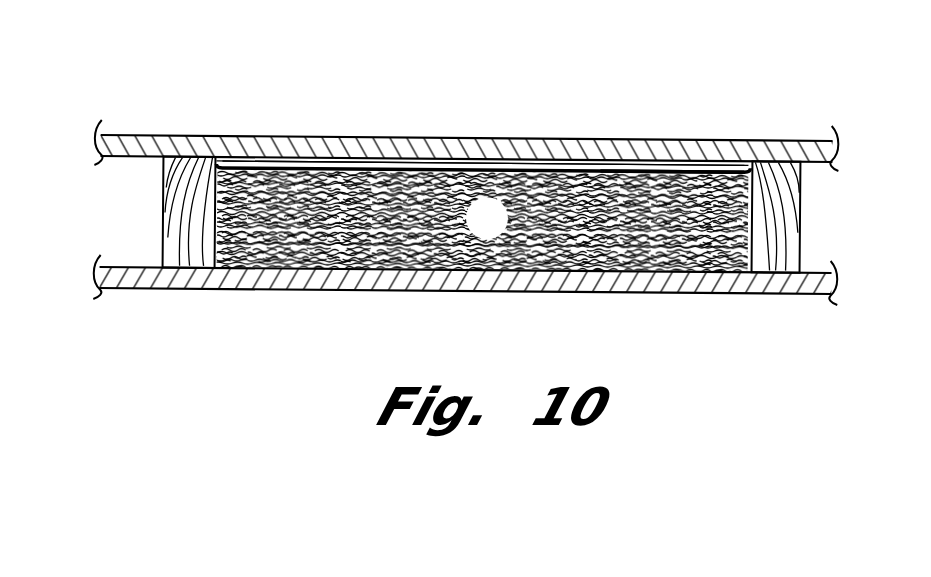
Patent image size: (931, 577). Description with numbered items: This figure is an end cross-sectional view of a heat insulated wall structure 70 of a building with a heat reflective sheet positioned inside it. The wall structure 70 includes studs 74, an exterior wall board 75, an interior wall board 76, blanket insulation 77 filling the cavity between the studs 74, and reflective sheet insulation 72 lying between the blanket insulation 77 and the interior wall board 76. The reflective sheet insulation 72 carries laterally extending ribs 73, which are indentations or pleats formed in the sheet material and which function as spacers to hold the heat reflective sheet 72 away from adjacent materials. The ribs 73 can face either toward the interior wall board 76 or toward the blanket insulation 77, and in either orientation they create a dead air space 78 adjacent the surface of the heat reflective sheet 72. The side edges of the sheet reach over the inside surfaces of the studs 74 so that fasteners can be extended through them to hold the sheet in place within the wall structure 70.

The heat insulated wall structure 70 is at (266, 110).
The reflective sheet insulation 72 is at (540, 165).
The ribs 73 is at (312, 163).
The studs 74 is at (175, 228).
The exterior wall board 75 is at (570, 283).
The interior wall board 76 is at (414, 150).
The blanket insulation 77 is at (475, 229).
The dead air space 78 is at (680, 164).